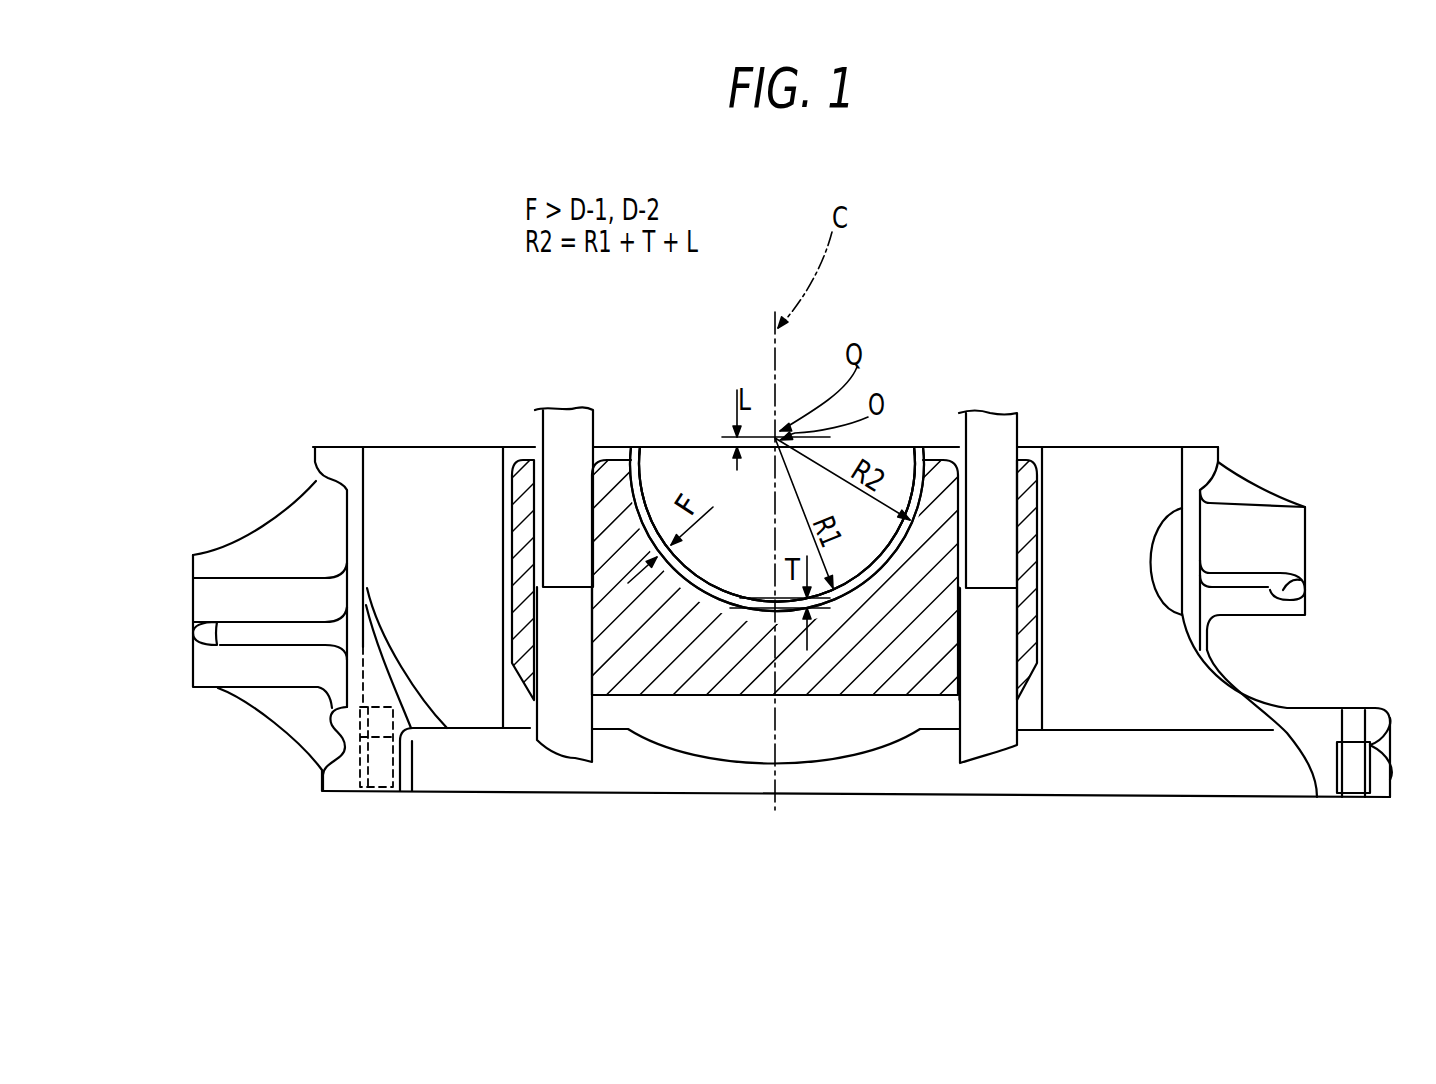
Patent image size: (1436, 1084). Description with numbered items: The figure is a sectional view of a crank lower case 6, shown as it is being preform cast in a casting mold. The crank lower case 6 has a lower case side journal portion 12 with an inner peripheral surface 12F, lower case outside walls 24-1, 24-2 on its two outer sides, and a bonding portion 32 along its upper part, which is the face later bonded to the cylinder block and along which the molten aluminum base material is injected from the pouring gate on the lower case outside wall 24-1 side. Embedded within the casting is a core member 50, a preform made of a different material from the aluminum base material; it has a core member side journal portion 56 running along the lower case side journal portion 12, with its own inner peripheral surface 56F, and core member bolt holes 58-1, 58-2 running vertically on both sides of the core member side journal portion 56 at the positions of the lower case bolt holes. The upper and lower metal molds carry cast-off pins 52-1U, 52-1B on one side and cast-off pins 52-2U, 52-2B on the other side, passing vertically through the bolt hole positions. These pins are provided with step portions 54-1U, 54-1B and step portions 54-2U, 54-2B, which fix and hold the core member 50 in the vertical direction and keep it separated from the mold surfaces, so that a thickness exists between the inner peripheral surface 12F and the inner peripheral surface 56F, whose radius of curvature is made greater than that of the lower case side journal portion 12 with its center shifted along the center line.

The crank lower case 6 is at (1257, 348).
The lower case side journal portion 12 is at (625, 468).
The inner peripheral surface of the lower case side journal portion 12F is at (656, 505).
The lower case outside wall 24-1 is at (353, 517).
The lower case outside wall 24-2 is at (1190, 542).
The bonding portion 32 is at (1148, 447).
The core member 50 is at (852, 697).
The cast-off pin 52-1U is at (553, 418).
The cast-off pin 52-1B is at (567, 738).
The step portion 54-1U is at (537, 458).
The step portion 54-1B is at (533, 700).
The cast-off pin 52-2U is at (1007, 435).
The cast-off pin 52-2B is at (1000, 730).
The step portion 54-2U is at (1025, 455).
The step portion 54-2B is at (962, 702).
The core member side journal portion 56 is at (693, 600).
The inner peripheral surface of the core member side journal portion 56F is at (676, 578).
The core member bolt hole 58-1 is at (588, 612).
The core member bolt hole 58-2 is at (968, 612).